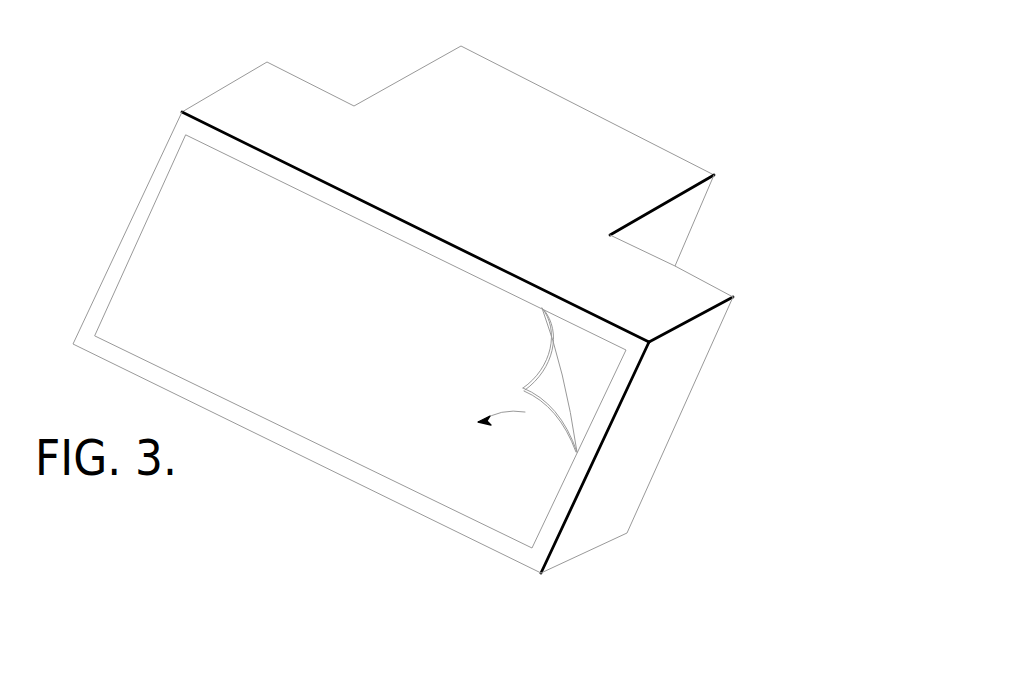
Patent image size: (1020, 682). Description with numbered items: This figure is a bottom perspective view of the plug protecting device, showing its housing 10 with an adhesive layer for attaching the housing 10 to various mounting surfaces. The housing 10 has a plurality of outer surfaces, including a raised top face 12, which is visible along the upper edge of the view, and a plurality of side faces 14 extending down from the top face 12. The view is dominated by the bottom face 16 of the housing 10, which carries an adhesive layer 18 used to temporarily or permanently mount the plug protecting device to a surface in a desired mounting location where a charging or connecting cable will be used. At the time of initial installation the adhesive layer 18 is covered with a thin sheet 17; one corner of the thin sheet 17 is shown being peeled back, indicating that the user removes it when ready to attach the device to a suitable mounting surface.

The housing 10 is at (264, 100).
The raised top face 12 is at (627, 122).
The side faces 14 is at (683, 222).
The bottom face 16 is at (113, 298).
The thin sheet 17 is at (497, 78).
The adhesive layer 18 is at (597, 380).